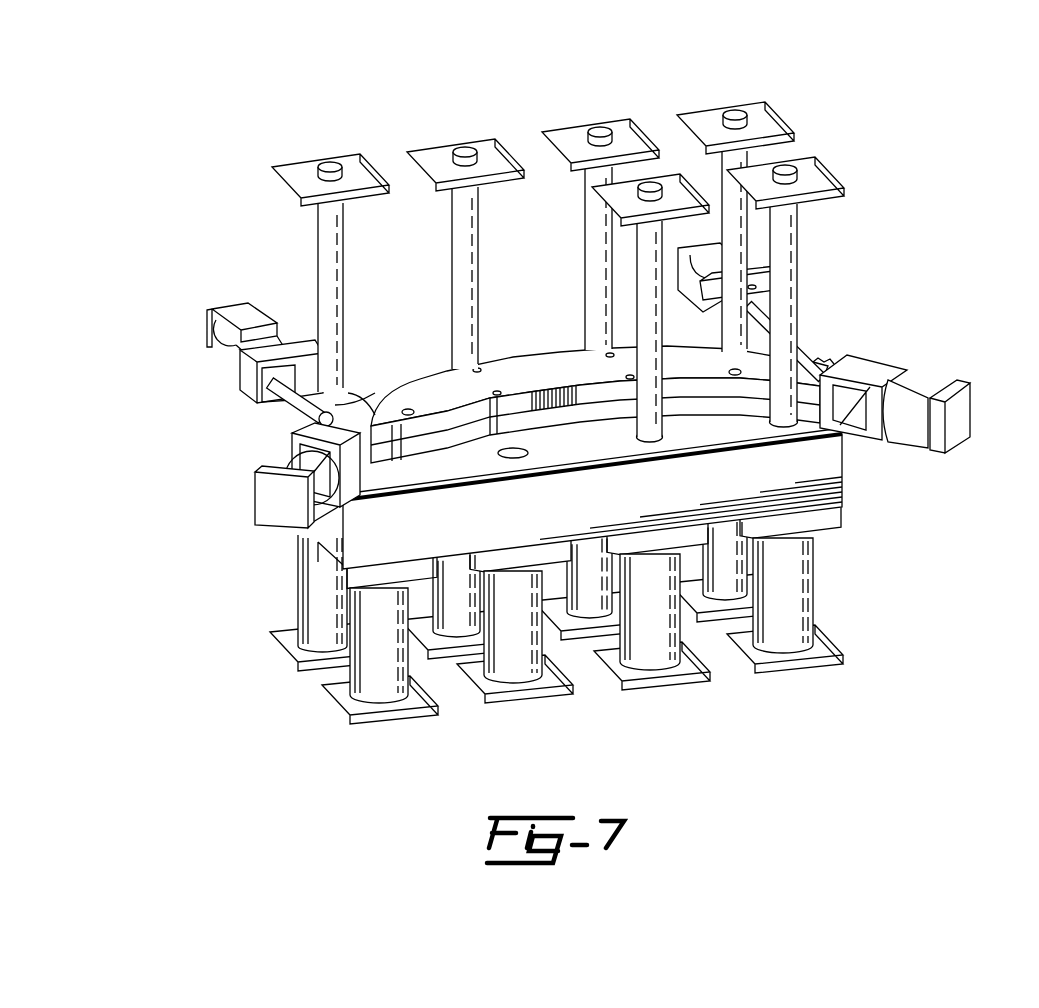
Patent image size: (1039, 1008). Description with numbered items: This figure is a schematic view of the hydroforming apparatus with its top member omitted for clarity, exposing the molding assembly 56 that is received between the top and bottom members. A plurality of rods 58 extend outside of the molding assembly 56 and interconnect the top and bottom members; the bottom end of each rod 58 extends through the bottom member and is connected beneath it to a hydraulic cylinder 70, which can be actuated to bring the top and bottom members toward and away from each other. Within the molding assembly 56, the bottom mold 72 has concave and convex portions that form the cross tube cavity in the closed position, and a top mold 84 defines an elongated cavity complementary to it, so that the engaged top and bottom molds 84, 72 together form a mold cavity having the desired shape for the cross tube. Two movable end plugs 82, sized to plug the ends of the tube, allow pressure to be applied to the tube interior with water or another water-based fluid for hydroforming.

The molding assembly 56 is at (828, 347).
The rods 58 is at (461, 148).
The hydraulic cylinder 70 is at (803, 597).
The bottom mold 72 is at (432, 442).
The end plugs 82 is at (925, 387).
The top mold 84 is at (378, 388).